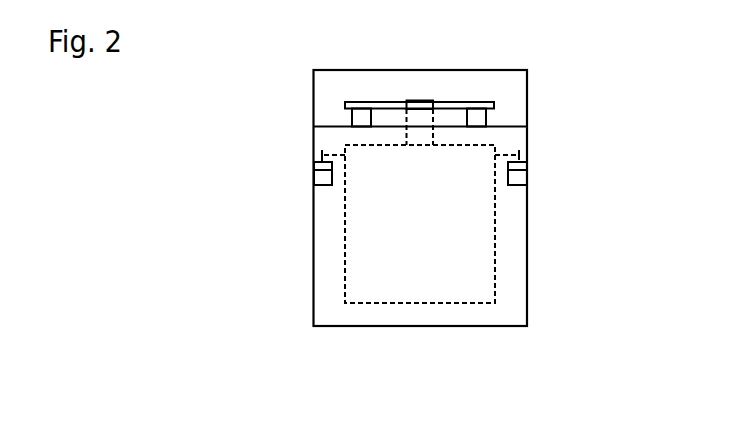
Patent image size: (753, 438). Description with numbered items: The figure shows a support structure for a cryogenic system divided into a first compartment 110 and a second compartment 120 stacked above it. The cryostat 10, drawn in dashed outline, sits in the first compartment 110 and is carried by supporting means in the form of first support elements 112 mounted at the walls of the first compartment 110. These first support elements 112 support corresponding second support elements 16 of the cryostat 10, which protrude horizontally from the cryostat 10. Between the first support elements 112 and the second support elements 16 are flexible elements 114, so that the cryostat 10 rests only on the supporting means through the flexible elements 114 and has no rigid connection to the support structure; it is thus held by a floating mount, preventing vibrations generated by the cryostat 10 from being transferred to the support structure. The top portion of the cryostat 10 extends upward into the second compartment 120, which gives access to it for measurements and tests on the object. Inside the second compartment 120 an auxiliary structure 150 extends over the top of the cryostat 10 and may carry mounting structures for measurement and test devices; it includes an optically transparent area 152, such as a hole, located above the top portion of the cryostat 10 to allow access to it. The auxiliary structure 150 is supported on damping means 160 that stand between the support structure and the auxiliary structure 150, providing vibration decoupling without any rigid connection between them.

The cryostat 10 is at (345, 233).
The second support elements 16 is at (327, 153).
The first compartment 110 is at (527, 223).
The first support elements 112 is at (314, 178).
The flexible elements 114 is at (314, 164).
The second compartment 120 is at (527, 98).
The auxiliary structure 150 is at (481, 101).
The optically transparent area 152 is at (420, 101).
The damping means 160 is at (485, 118).